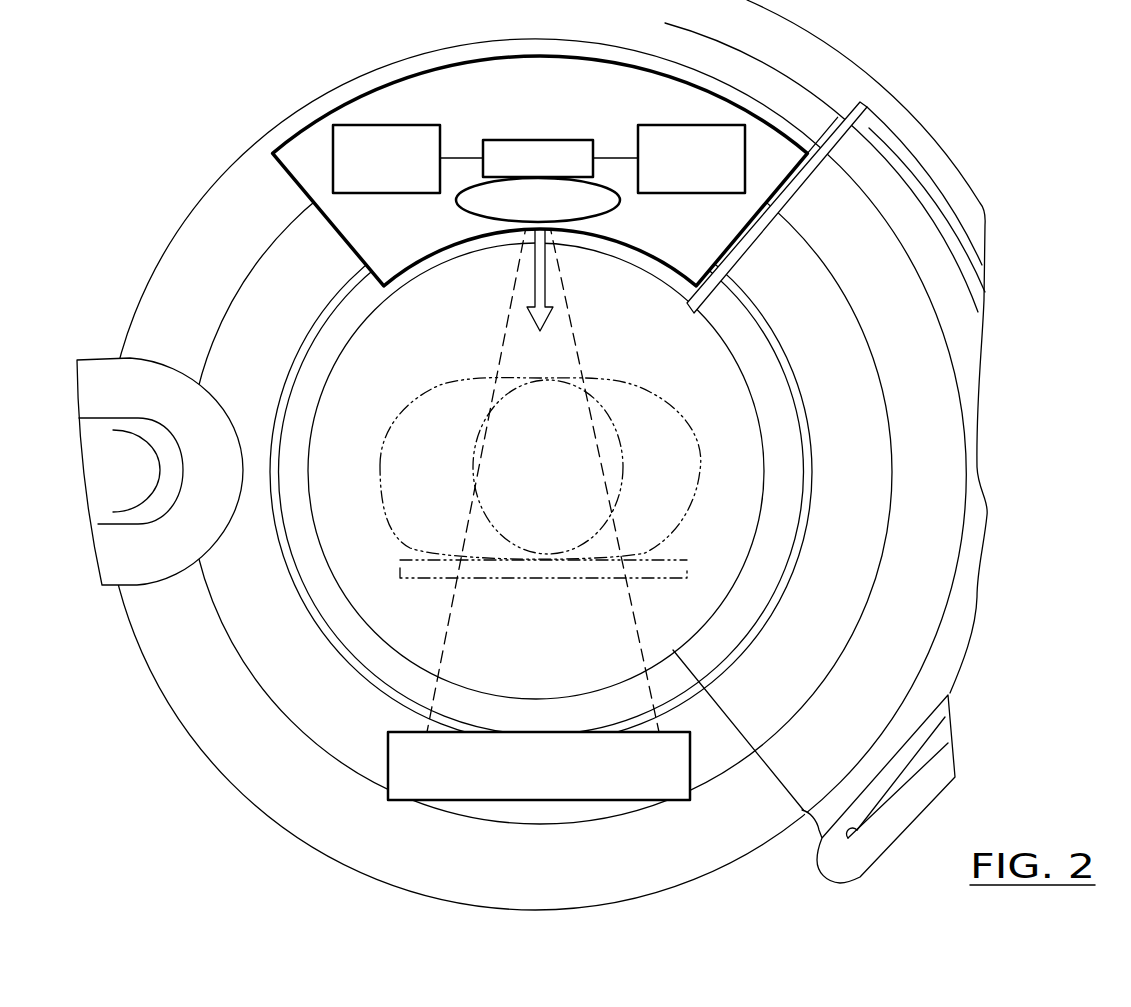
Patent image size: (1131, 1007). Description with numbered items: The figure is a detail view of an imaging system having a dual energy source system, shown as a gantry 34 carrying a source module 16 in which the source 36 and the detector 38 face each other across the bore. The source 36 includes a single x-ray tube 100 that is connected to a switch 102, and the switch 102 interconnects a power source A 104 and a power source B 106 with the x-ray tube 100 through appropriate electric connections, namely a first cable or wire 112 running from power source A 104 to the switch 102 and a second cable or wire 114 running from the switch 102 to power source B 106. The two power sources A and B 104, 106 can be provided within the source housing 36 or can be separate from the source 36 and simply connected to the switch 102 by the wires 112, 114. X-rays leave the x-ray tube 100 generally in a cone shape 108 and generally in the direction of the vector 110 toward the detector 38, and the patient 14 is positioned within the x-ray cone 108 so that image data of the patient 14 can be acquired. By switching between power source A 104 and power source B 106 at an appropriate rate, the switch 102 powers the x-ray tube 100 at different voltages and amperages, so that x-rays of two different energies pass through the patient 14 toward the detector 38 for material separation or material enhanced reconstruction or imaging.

The patient 14 is at (647, 403).
The x-ray source module 16 is at (300, 76).
The gantry housing 34 is at (252, 145).
The source 36 is at (300, 187).
The detector 38 is at (388, 763).
The x-ray tube 100 is at (473, 213).
The switch 102 is at (547, 140).
The power source A 104 is at (350, 125).
The power source B 106 is at (723, 125).
The cone shape 108 is at (577, 363).
The vector 110 is at (533, 320).
The first cable or wire 112 is at (456, 158).
The second cable or wire 114 is at (627, 158).